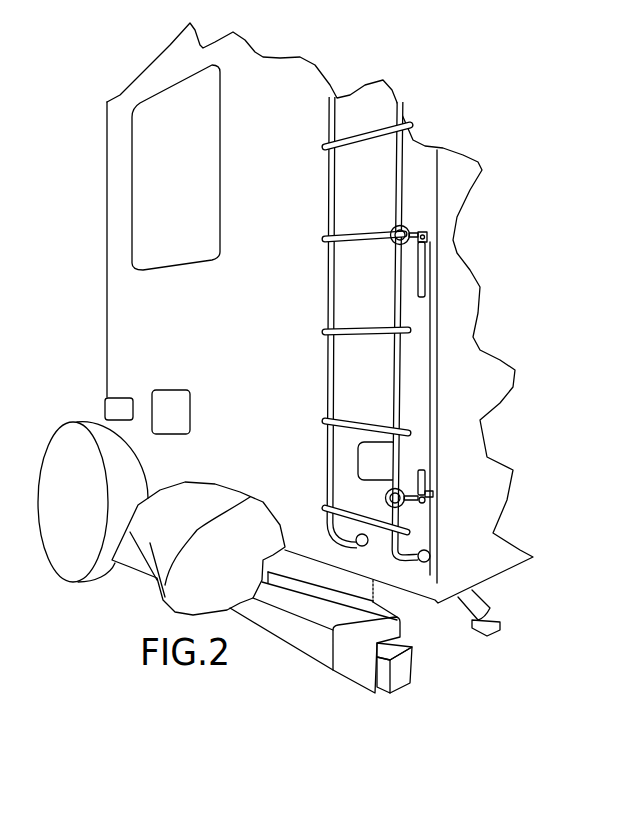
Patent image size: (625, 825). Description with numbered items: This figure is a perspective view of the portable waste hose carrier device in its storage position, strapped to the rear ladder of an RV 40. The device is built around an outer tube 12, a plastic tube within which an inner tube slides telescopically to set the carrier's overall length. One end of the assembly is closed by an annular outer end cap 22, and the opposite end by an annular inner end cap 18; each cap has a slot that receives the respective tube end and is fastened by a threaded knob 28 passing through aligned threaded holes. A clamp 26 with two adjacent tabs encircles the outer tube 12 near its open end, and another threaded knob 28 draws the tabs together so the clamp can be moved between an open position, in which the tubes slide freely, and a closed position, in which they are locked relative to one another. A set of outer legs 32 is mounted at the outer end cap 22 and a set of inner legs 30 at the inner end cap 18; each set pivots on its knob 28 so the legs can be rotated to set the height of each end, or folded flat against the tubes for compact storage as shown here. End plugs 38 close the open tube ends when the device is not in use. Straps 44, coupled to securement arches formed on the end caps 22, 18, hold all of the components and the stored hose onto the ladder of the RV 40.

The outer tube 12 is at (420, 347).
The inner end cap 18 is at (413, 503).
The outer end cap 22 is at (427, 237).
The clamp 26 is at (432, 490).
The threaded knob 28 is at (427, 241).
The inner legs 30 is at (423, 482).
The outer legs 32 is at (424, 280).
The end plugs 38 is at (422, 237).
The RV 40 is at (122, 330).
The straps 44 is at (402, 240).